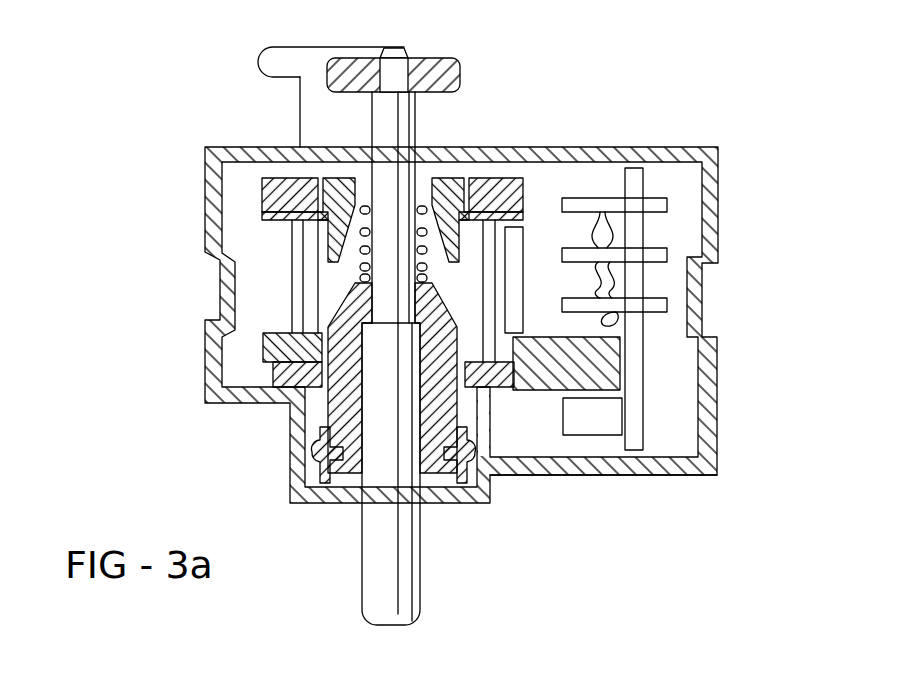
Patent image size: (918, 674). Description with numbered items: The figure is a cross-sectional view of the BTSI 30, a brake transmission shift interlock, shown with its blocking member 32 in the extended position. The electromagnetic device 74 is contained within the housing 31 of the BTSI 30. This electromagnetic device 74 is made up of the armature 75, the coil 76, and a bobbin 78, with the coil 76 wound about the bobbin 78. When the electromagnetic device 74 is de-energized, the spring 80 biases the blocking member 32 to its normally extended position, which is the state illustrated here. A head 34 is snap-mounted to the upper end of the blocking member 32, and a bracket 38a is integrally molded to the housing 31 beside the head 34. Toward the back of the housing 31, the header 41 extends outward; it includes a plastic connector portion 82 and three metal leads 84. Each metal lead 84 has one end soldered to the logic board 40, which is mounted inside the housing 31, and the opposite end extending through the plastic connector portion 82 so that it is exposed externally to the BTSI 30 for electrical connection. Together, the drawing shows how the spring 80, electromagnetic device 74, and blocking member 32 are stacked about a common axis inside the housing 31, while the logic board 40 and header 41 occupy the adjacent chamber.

The BTSI 30 is at (712, 94).
The housing 31 is at (667, 470).
The blocking member 32 is at (415, 547).
The head 34 is at (458, 80).
The bracket 38a is at (260, 65).
The logic board 40 is at (635, 398).
The header 41 is at (666, 268).
The electromagnetic device 74 is at (267, 398).
The armature 75 is at (348, 470).
The coil 76 is at (290, 228).
The bobbin 78 is at (258, 215).
The spring 80 is at (365, 267).
The plastic connector portion 82 is at (564, 232).
The metal leads 84 is at (667, 204).